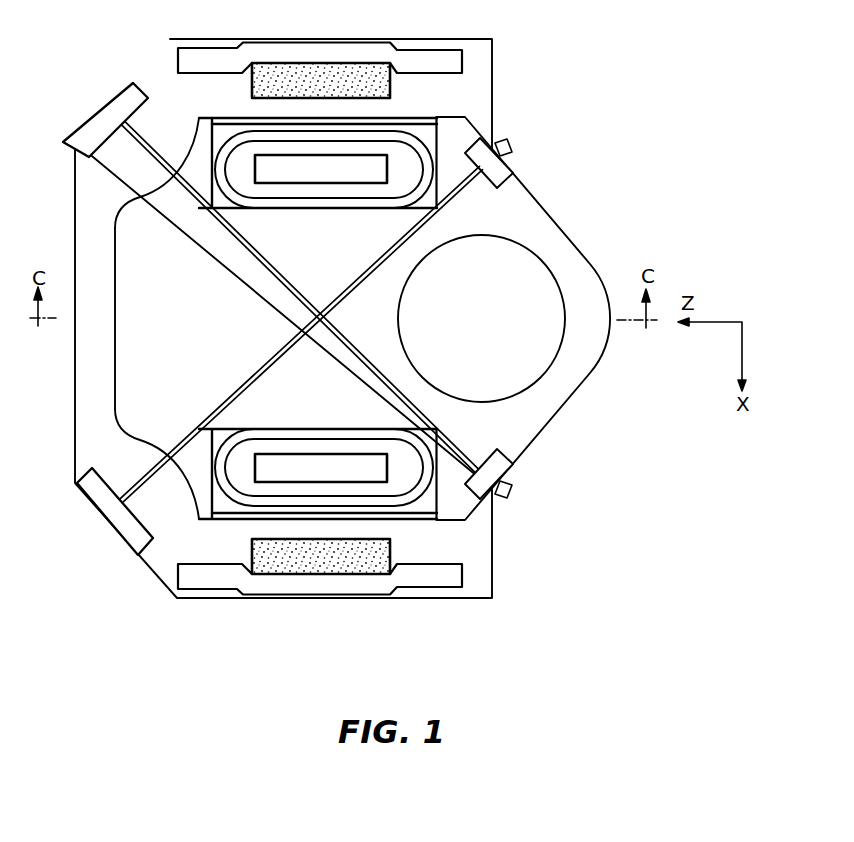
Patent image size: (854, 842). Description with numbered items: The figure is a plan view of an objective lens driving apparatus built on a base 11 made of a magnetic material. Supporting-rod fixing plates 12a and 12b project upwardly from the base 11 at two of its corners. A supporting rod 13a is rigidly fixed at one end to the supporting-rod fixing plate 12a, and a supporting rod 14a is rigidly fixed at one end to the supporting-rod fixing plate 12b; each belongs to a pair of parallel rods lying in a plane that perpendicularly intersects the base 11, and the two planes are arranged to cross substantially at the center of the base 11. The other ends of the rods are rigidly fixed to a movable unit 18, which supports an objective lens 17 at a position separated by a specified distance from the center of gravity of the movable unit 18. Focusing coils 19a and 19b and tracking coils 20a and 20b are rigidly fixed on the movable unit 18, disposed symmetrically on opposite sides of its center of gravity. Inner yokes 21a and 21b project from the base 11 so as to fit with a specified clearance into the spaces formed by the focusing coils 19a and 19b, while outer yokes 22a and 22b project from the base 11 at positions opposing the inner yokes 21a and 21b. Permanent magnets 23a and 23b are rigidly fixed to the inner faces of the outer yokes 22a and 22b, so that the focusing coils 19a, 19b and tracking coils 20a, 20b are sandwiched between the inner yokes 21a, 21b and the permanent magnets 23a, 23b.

The base 11 is at (492, 83).
The supporting-rod fixing plate 12a is at (126, 532).
The supporting-rod fixing plate 12b is at (96, 124).
The supporting rod 13a is at (272, 358).
The supporting rod 14a is at (273, 263).
The objective lens 17 is at (489, 323).
The movable unit 18 is at (560, 232).
The focusing coil 19a is at (412, 499).
The focusing coil 19b is at (402, 132).
The tracking coil 20a is at (235, 512).
The tracking coil 20b is at (233, 122).
The inner yoke 21a is at (347, 465).
The inner yoke 21b is at (340, 172).
The outer yoke 22a is at (283, 591).
The outer yoke 22b is at (308, 42).
The permanent magnet 23a is at (351, 575).
The permanent magnet 23b is at (362, 63).